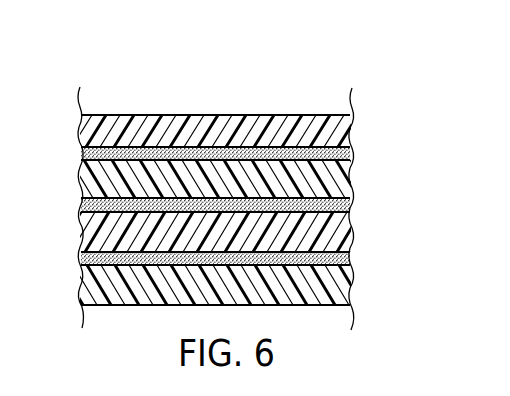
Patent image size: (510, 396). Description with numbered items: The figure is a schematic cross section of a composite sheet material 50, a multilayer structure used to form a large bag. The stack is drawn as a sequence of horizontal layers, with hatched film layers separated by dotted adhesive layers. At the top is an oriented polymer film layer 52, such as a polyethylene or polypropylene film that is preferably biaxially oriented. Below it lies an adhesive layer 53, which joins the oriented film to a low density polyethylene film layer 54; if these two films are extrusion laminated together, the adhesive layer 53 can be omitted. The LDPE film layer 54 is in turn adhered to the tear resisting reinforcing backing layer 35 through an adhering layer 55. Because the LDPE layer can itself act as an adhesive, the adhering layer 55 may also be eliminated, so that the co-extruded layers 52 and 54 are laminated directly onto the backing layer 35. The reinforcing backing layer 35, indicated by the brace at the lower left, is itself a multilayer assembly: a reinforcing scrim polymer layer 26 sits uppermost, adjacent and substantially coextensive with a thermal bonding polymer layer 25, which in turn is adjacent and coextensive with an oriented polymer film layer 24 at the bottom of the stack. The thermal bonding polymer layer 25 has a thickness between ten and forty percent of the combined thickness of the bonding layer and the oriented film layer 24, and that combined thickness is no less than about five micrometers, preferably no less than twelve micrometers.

The composite sheet material 50 is at (209, 76).
The oriented polymer film layer 52 is at (338, 129).
The adhesive layer 53 is at (352, 154).
The low density polyethylene film layer 54 is at (340, 181).
The adhering layer 55 is at (352, 206).
The reinforcing backing layer 35 is at (65, 213).
The reinforcing scrim polymer layer 26 is at (338, 233).
The thermal bonding polymer layer 25 is at (340, 258).
The oriented polymer film layer 24 is at (338, 285).